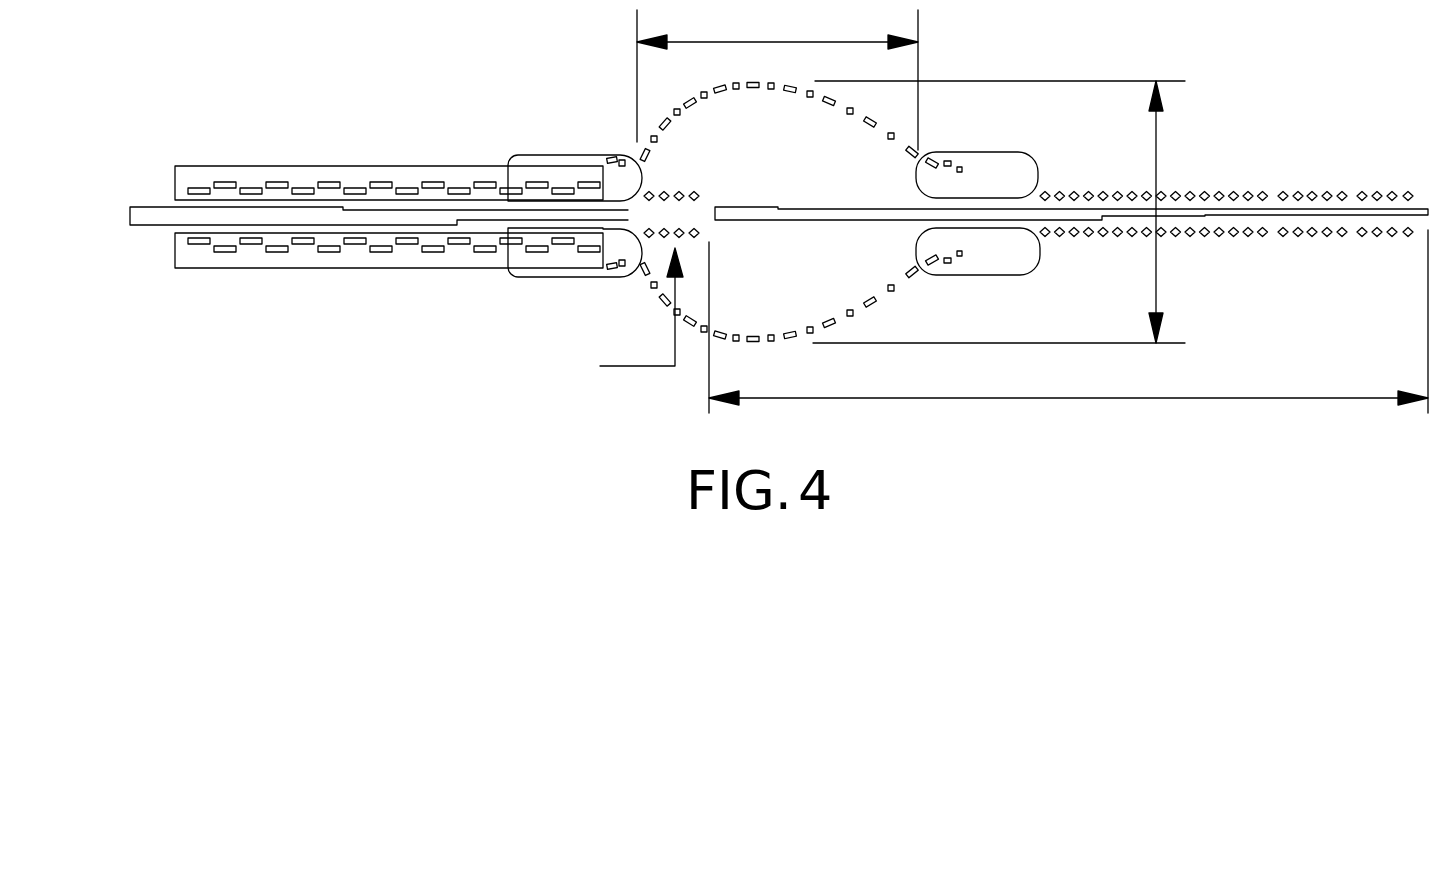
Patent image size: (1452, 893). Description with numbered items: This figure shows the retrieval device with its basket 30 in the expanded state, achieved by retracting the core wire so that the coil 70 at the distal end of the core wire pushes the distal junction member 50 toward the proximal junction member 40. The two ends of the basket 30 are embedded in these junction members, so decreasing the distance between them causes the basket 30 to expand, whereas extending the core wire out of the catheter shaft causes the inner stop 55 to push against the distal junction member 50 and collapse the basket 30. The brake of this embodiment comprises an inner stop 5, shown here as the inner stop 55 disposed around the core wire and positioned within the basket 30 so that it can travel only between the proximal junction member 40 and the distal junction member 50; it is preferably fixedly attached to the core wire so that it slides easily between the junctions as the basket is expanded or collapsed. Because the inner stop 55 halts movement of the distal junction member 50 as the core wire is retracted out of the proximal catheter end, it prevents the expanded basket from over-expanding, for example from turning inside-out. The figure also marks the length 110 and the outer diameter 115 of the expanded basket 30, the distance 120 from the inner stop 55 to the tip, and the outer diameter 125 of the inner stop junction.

The inner stop 5 is at (462, 166).
The basket 30 is at (845, 112).
The proximal junction member 40 is at (613, 268).
The distal junction member 50 is at (1003, 175).
The inner stop 55 is at (677, 215).
The coil 70 is at (1343, 207).
The length of expanded basket 110 is at (777, 79).
The outer diameter of expanded basket 115 is at (1018, 212).
The distance from inner stop to tip 120 is at (1068, 321).
The outer diameter of inner stop junction 125 is at (610, 316).